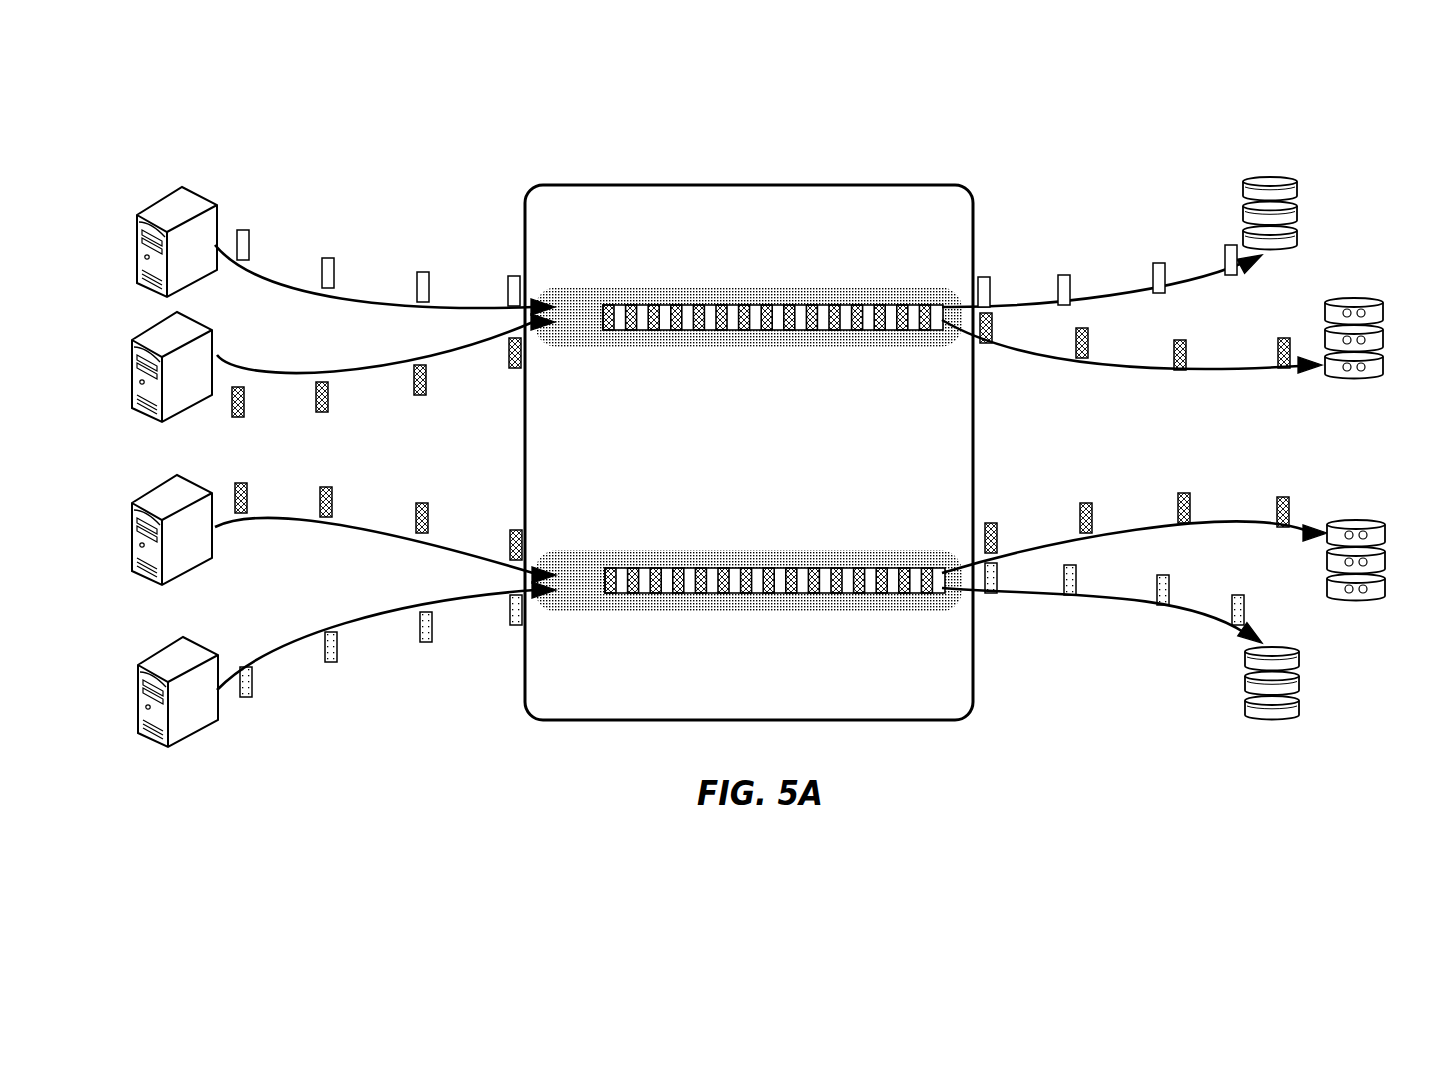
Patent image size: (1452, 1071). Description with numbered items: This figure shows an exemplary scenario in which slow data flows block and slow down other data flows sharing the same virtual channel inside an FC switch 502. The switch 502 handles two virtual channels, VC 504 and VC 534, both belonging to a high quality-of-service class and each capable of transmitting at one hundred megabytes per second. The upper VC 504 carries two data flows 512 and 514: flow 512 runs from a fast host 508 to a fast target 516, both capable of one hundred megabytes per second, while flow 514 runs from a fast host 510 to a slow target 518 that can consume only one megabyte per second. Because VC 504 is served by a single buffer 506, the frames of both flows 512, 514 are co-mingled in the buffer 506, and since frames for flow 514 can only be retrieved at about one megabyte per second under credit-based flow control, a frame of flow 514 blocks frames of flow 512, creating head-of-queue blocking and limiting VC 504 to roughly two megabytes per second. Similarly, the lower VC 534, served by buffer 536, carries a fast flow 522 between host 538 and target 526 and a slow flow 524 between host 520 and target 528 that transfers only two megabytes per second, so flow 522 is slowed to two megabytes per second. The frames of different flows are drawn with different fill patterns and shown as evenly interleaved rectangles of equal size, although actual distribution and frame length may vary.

The FC switch 502 is at (749, 452).
The virtual channel 504 is at (555, 290).
The buffer 506 is at (818, 305).
The fast host 508 is at (205, 190).
The fast host 510 is at (207, 323).
The data flow 512 is at (357, 292).
The data flow 514 is at (357, 366).
The fast target 516 is at (1265, 180).
The slow target 518 is at (1412, 300).
The host 520 is at (208, 565).
The fast flow 522 is at (360, 620).
The slow flow 524 is at (362, 530).
The target 526 is at (1262, 722).
The target 528 is at (1413, 598).
The virtual channel 534 is at (555, 612).
The buffer 536 is at (818, 595).
The host 538 is at (197, 733).